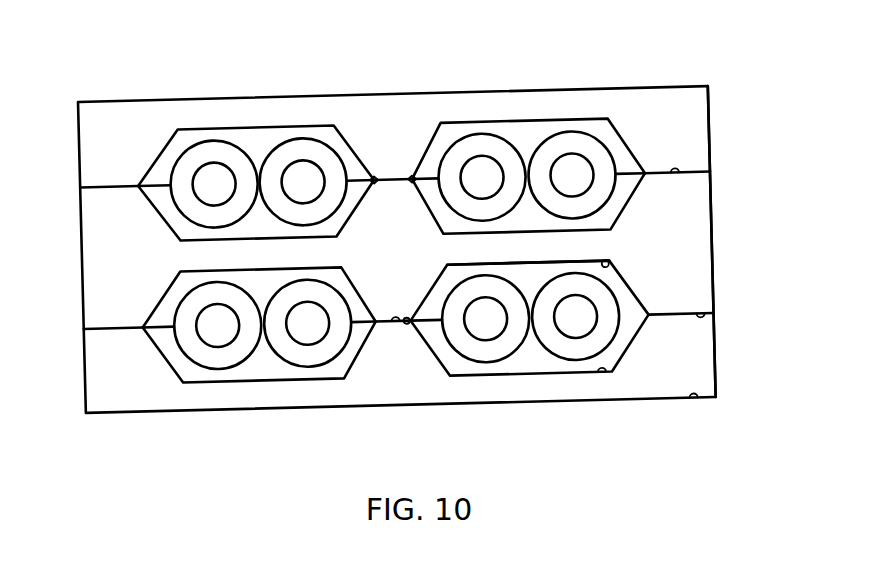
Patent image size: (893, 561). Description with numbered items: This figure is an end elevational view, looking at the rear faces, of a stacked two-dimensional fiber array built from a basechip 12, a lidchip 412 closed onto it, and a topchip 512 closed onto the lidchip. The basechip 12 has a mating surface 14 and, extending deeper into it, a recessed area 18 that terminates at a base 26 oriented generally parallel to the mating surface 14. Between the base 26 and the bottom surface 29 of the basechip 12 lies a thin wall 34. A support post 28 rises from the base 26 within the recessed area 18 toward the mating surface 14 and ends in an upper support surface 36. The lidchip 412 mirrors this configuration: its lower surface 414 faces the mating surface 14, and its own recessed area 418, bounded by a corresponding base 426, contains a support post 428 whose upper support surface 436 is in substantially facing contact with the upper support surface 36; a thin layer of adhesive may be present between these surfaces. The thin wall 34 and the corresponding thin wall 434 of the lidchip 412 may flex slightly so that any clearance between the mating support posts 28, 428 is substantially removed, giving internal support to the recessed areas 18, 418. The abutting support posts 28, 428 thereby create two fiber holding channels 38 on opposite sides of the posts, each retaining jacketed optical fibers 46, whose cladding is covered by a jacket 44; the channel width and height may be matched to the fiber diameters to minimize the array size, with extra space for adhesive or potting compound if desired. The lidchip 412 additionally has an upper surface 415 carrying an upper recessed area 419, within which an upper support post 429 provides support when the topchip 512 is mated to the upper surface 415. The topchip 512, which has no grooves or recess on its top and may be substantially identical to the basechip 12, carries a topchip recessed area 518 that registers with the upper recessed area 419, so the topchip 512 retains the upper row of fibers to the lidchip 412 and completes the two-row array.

The basechip 12 is at (114, 418).
The mating surface 14 is at (678, 312).
The recessed area 18 is at (533, 363).
The base 26 is at (608, 372).
The support post 28 is at (410, 365).
The bottom surface 29 is at (697, 397).
The thin wall 34 is at (572, 392).
The upper support surface 36 is at (392, 327).
The fiber holding channels 38 is at (175, 295).
The jacket 44 is at (200, 150).
The optical fibers 46 is at (173, 165).
The lidchip 412 is at (711, 203).
The lower surface 414 is at (700, 316).
The upper surface 415 is at (681, 170).
The recessed area 418 is at (527, 280).
The upper recessed area 419 is at (420, 190).
The alignment feature 426 is at (610, 262).
The support post 428 is at (383, 302).
The upper support post 429 is at (373, 224).
The thin wall 434 is at (193, 258).
The upper support surface 436 is at (403, 318).
The topchip 512 is at (709, 117).
The topchip recessed area 518 is at (257, 133).